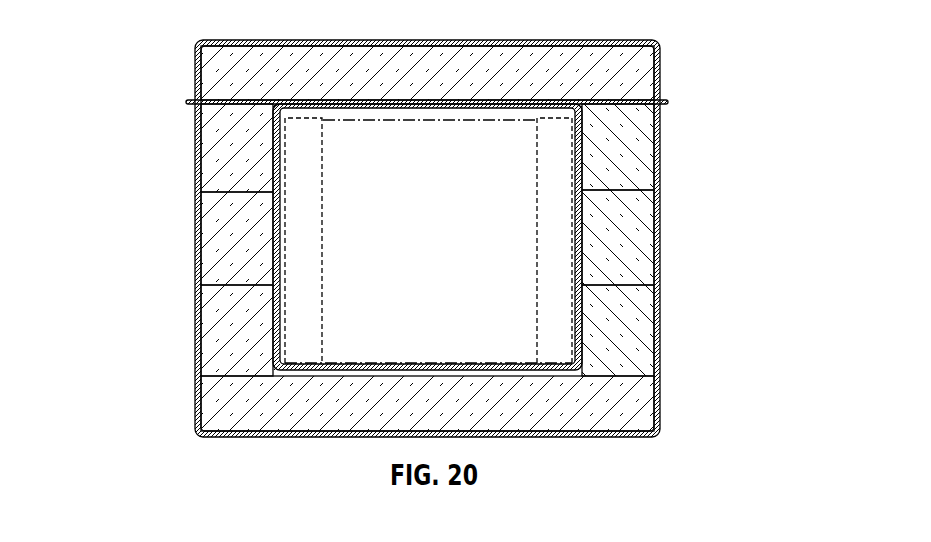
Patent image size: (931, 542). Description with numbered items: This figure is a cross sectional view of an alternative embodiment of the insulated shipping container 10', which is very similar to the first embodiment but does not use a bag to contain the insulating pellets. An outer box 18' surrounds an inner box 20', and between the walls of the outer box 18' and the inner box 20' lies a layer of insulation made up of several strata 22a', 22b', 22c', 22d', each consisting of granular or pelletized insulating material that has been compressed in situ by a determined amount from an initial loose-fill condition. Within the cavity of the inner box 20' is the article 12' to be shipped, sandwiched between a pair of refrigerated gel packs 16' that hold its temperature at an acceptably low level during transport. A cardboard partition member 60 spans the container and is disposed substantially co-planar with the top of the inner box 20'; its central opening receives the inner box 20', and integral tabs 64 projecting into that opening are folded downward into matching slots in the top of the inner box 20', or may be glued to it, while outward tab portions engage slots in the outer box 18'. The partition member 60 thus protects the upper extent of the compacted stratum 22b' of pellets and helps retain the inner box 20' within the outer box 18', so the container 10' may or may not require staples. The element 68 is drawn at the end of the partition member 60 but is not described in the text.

The insulated shipping container 10' is at (417, 220).
The article 12' is at (428, 241).
The refrigerated gel packs 16' is at (428, 240).
The outer box 18' is at (202, 151).
The inner box 20' is at (202, 284).
The insulation stratum 22a' is at (464, 403).
The insulation stratum 22b' is at (653, 147).
The insulation stratum 22c' is at (653, 237).
The insulation stratum 22d' is at (654, 330).
The cardboard partition member 60 is at (641, 41).
The integral tabs 64 is at (568, 108).
The flange 68 is at (667, 101).